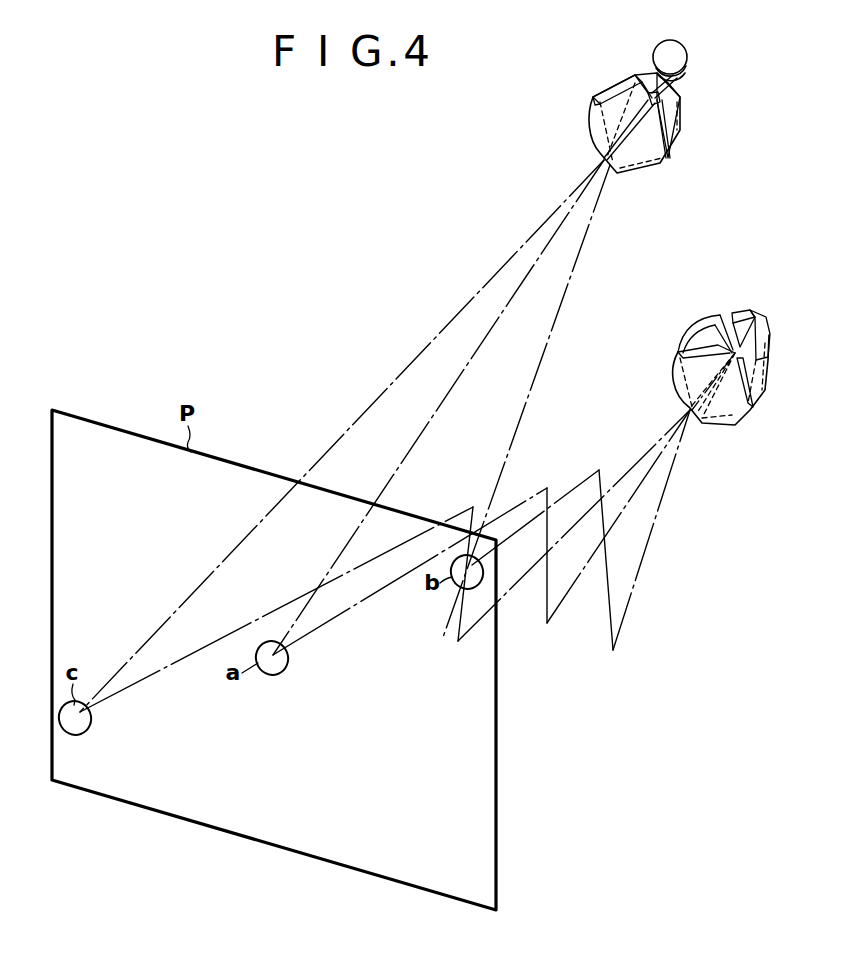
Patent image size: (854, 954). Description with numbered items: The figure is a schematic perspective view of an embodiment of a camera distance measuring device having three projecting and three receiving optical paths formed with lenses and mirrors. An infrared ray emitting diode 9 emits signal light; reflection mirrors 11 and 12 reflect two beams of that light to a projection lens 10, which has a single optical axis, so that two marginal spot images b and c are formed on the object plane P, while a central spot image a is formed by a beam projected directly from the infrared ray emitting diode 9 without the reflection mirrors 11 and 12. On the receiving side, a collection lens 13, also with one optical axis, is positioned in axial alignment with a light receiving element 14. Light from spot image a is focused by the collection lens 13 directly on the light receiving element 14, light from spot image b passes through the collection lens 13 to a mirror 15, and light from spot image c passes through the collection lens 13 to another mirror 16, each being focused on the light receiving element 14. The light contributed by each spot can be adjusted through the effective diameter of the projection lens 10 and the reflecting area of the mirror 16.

The infrared ray emitting diode 9 is at (667, 49).
The projection lens 10 is at (590, 140).
The reflection mirror 11 is at (617, 82).
The reflection mirror 12 is at (679, 125).
The collection lens 13 is at (721, 427).
The light receiving element 14 is at (733, 312).
The mirror 15 is at (702, 333).
The mirror 16 is at (765, 394).